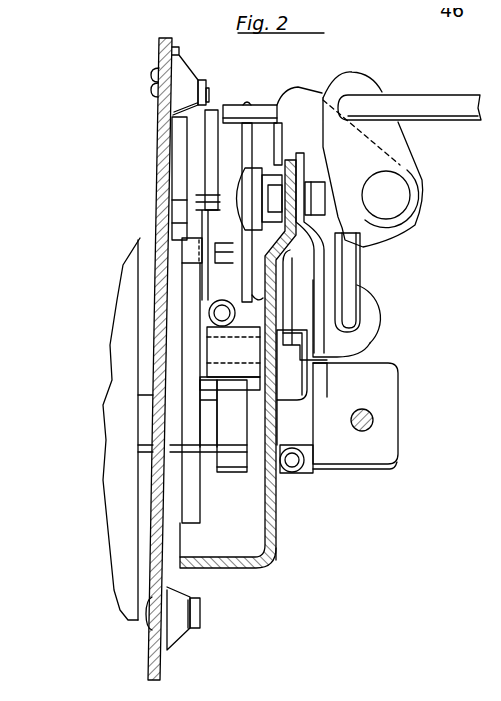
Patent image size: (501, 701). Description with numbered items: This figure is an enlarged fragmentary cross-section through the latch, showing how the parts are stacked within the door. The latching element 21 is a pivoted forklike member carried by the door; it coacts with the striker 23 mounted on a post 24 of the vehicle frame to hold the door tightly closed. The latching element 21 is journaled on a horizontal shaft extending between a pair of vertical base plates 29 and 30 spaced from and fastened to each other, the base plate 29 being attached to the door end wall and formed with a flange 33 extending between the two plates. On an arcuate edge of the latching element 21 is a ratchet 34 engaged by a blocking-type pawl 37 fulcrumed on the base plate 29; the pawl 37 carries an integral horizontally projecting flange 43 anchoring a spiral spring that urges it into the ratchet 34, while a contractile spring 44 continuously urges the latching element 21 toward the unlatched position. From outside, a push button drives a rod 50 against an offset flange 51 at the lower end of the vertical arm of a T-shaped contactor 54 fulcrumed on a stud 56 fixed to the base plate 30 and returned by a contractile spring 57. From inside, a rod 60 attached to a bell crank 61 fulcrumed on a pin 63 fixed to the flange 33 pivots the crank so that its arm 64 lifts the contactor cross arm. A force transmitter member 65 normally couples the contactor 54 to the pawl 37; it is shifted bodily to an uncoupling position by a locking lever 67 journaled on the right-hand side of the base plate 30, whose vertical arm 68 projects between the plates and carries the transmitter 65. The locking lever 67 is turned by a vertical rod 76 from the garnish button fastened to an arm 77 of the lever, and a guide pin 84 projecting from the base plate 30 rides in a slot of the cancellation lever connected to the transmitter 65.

The latching element 21 is at (199, 500).
The striker 23 is at (210, 452).
The post 24 is at (110, 490).
The base plate 29 is at (165, 172).
The base plate 30 is at (274, 535).
The flange 33 is at (290, 93).
The ratchet 34 is at (181, 243).
The pawl 37 is at (190, 154).
The flange 43 is at (232, 105).
The contractile spring 44 is at (217, 330).
The rod 50 is at (376, 421).
The offset flange 51 is at (400, 385).
The contactor 54 is at (330, 295).
The stud 56 is at (308, 185).
The contractile spring 57 is at (289, 472).
The rod 60 is at (420, 106).
The bell crank 61 is at (350, 78).
The pin 63 is at (405, 198).
The arm 64 is at (383, 227).
The force transmitter member 65 is at (261, 162).
The locking lever 67 is at (318, 373).
The vertical arm 68 is at (244, 344).
The vertical rod 76 is at (352, 255).
The arm 77 is at (372, 313).
The guide pin 84 is at (220, 267).